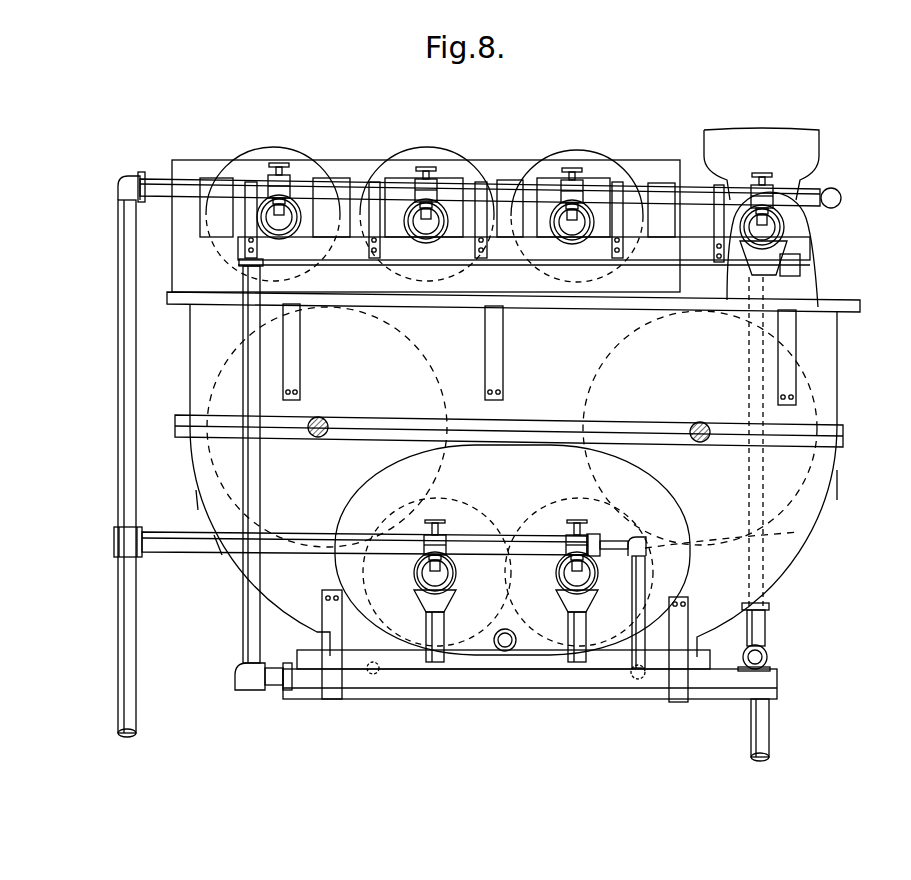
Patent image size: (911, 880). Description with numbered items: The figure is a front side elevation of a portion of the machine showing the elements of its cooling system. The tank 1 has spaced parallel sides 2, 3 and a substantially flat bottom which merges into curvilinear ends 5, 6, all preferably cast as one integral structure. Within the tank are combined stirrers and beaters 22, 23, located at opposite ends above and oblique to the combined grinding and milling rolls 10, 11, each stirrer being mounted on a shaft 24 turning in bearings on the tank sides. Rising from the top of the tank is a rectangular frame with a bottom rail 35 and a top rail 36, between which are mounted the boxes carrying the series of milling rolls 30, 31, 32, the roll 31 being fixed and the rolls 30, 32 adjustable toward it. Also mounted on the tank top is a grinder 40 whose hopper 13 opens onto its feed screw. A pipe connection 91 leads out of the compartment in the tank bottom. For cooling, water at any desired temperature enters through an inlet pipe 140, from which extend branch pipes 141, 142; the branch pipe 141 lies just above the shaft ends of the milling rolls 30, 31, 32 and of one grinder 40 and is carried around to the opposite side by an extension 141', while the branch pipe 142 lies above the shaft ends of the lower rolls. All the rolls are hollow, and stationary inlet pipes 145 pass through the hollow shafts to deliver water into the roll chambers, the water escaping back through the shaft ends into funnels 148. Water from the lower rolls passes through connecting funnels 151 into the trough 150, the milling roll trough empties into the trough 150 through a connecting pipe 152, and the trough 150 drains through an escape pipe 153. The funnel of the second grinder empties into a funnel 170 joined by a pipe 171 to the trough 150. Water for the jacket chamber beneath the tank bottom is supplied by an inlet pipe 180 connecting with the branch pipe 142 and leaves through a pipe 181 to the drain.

The tank 1 is at (524, 480).
The side 2 is at (251, 539).
The side 3 is at (673, 506).
The curvilinear end 5 is at (237, 562).
The curvilinear end 6 is at (834, 494).
The combined grinding and milling roll 10 is at (470, 516).
The combined grinding and milling roll 11 is at (547, 516).
The hopper 13 is at (810, 146).
The combined stirrer and beater 22 is at (431, 374).
The combined stirrer and beater 23 is at (640, 336).
The shaft 24 is at (320, 418).
The milling roll 30 is at (277, 146).
The milling roll 31 is at (418, 160).
The milling roll 32 is at (566, 161).
The bottom rail 35 is at (190, 273).
The top rail 36 is at (190, 162).
The grinder 40 is at (800, 226).
The pipe connection 91 is at (510, 629).
The inlet pipe 140 is at (118, 414).
The branch pipe 141 is at (469, 169).
The extension 141' is at (849, 186).
The branch pipe 142 is at (167, 528).
The inlet pipe 145 is at (282, 223).
The funnel 148 is at (412, 238).
The trough 150 is at (307, 690).
The connecting funnel 151 is at (426, 618).
The connecting pipe 152 is at (259, 511).
The drain pipe 153 is at (770, 728).
The funnel 170 is at (753, 252).
The pipe 171 is at (800, 532).
The inlet pipe 180 is at (638, 590).
The pipe 181 is at (377, 670).